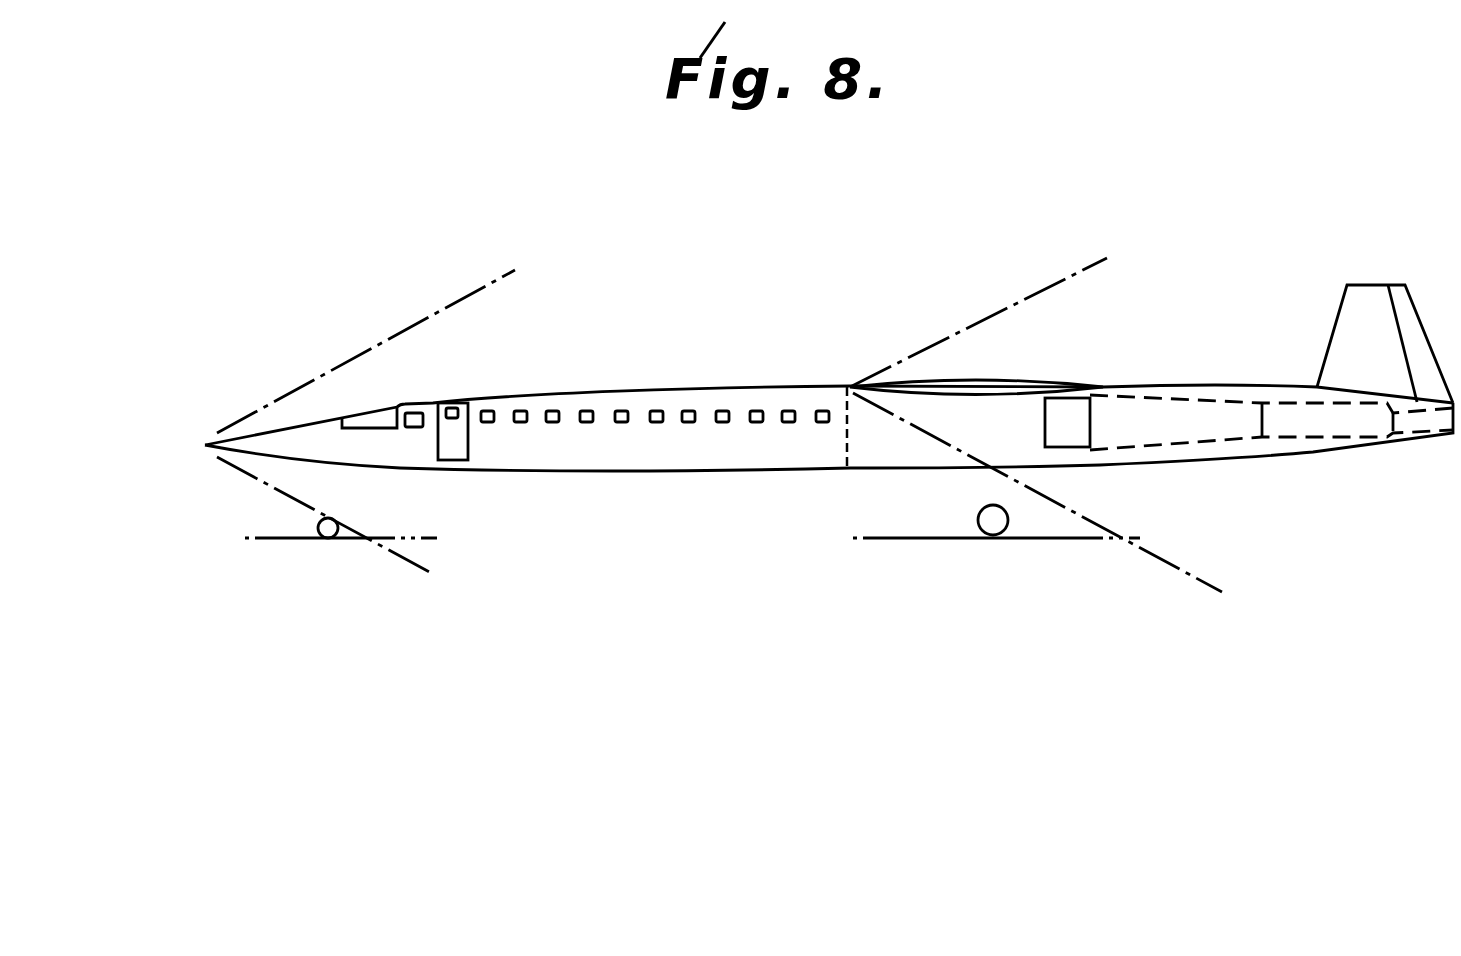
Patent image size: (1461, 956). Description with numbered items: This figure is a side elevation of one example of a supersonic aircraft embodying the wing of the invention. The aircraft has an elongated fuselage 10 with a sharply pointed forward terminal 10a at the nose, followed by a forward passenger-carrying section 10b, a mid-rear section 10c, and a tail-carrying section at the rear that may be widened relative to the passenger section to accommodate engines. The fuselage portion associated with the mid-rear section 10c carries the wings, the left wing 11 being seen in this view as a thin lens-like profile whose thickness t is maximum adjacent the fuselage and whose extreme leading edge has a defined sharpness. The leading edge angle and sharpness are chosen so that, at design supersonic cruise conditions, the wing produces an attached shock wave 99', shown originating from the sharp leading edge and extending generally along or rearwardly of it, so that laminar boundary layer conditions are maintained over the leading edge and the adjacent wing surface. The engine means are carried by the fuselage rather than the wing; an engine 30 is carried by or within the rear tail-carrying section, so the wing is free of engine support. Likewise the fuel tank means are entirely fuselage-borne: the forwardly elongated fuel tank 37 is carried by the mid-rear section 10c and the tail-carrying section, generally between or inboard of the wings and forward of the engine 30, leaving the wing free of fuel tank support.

The fuselage 10 is at (570, 476).
The forward terminal 10a is at (205, 445).
The forward passenger-carrying section 10b is at (633, 450).
The mid-rear section 10c is at (907, 470).
The left wing 11 is at (955, 378).
The engine 30 is at (1318, 427).
The fuel tank 37 is at (1063, 470).
The attached shock wave 99' is at (719, 461).
The thickness t is at (1020, 422).